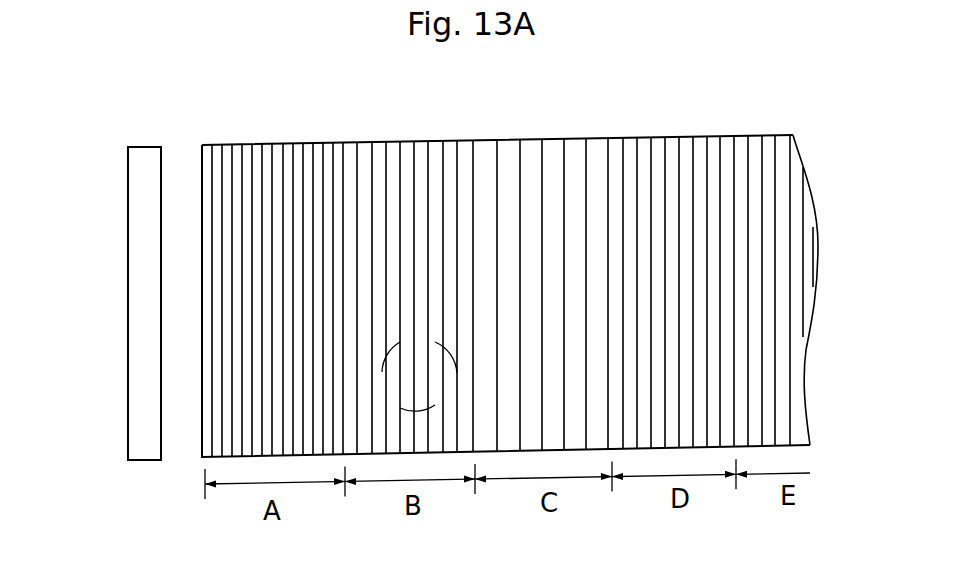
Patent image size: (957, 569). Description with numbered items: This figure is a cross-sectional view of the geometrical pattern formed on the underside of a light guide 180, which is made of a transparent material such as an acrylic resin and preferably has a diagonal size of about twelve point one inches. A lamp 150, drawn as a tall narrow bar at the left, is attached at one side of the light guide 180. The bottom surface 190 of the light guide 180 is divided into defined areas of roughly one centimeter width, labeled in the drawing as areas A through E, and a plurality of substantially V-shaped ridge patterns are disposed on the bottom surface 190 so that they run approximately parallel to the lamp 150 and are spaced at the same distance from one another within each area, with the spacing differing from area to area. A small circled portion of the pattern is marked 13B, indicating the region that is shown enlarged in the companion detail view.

The lamp 150 is at (130, 381).
The light guide 180 is at (438, 140).
The bottom surface 190 is at (668, 138).
The detail region shown in Fig. 13B is at (398, 410).